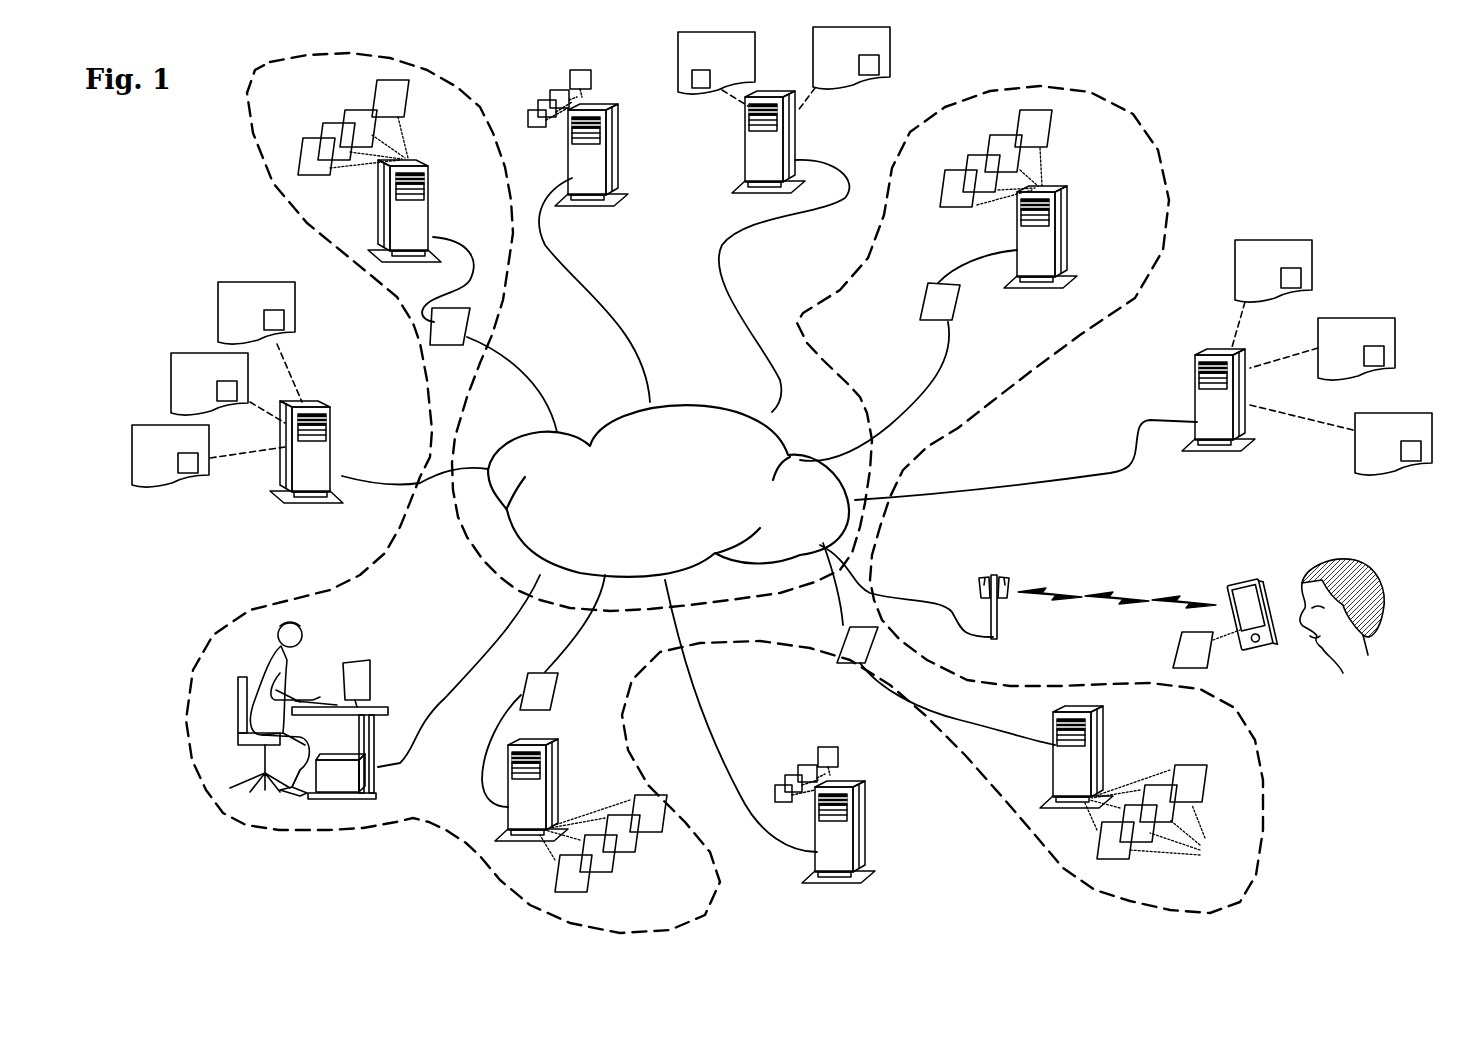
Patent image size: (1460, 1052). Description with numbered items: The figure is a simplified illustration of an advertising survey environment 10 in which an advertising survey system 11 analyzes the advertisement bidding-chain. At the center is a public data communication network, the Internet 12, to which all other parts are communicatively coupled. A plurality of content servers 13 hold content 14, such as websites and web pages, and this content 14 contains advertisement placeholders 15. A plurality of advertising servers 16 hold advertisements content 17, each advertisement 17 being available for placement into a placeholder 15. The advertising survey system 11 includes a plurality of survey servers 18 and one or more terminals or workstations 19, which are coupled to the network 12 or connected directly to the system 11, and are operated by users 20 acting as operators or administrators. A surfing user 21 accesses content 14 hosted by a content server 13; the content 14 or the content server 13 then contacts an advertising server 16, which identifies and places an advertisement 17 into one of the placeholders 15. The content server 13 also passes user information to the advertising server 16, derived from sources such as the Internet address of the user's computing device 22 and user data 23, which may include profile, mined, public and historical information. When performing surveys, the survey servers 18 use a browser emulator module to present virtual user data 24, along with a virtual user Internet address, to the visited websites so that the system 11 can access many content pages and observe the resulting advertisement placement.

The advertising survey environment 10 is at (564, 332).
The advertising survey system 11 is at (430, 170).
The Internet 12 is at (772, 418).
The content server 13 is at (793, 148).
The content 14 is at (678, 37).
The advertisement placeholder 15 is at (700, 88).
The advertising server 16 is at (617, 162).
The advertisement 17 is at (572, 73).
The survey server 18 is at (430, 204).
The terminal or workstation 19 is at (368, 696).
The user 20 is at (270, 653).
The user 21 is at (1344, 560).
The user's computing device 22 is at (1246, 585).
The user data 23 is at (1180, 643).
The virtual user data 24 is at (375, 88).